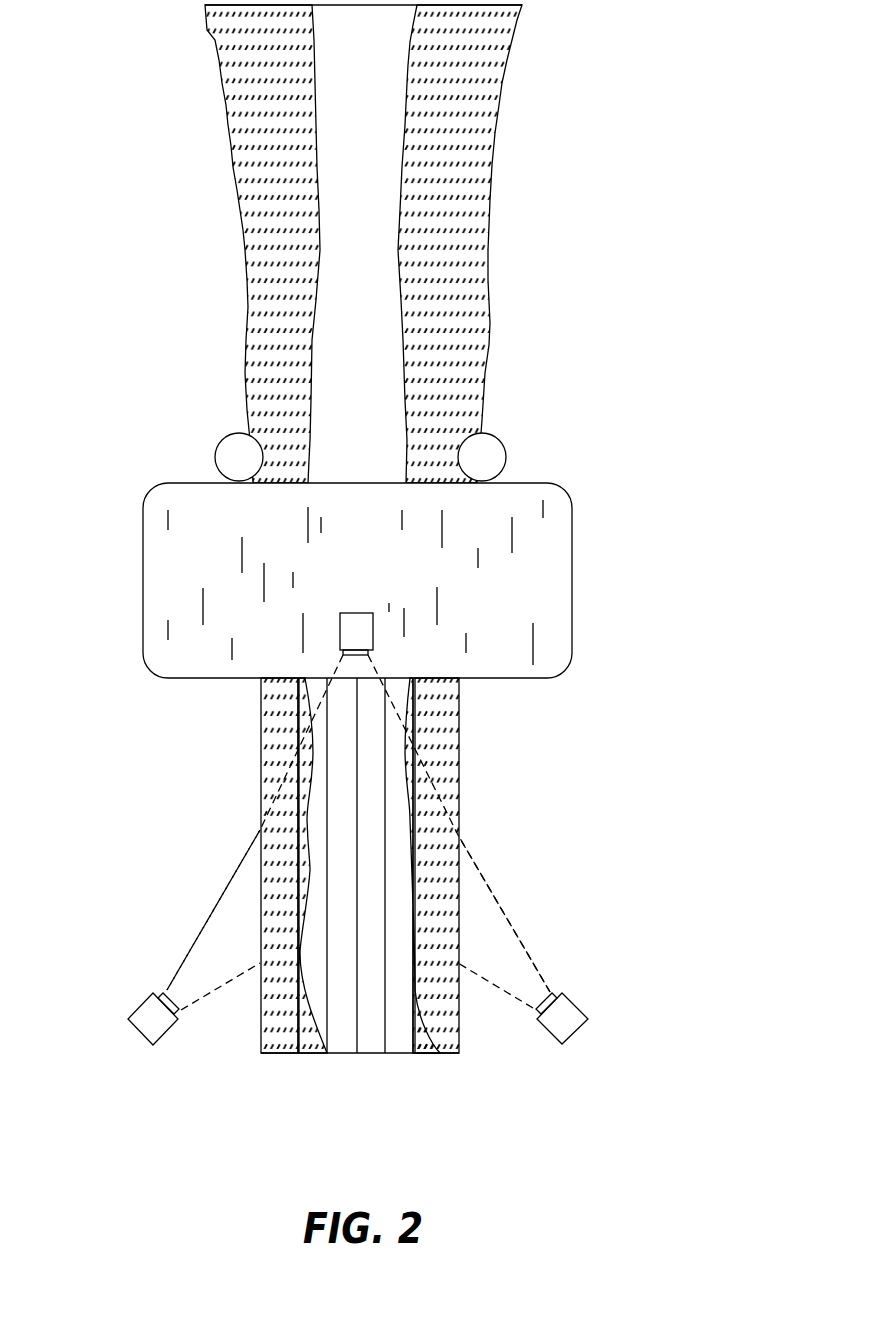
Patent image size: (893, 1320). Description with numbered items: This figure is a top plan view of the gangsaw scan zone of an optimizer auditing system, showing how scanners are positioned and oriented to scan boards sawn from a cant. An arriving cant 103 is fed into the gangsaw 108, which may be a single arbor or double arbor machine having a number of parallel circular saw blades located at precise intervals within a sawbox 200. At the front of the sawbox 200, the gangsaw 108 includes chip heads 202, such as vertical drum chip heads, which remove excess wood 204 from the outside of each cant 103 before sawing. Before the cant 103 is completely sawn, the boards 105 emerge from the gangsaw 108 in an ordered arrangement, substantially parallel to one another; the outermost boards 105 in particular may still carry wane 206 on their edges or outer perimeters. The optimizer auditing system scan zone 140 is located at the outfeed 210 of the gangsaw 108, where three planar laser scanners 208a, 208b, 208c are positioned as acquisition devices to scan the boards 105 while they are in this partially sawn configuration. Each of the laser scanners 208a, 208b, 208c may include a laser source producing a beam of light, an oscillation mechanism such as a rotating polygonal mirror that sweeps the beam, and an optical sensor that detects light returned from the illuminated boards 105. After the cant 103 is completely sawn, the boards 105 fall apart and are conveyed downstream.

The cant 103 is at (538, 333).
The gangsaw 108 is at (386, 572).
The excess wood 204 is at (237, 113).
The chip heads 202 is at (215, 456).
The sawbox 200 is at (573, 598).
The planar laser scanner 208a is at (375, 632).
The planar laser scanner 208b is at (140, 1034).
The planar laser scanner 208c is at (580, 1033).
The wane 206 is at (260, 745).
The outfeed 210 is at (480, 693).
The optimizer auditing system scan zone 140 is at (450, 865).
The boards 105 is at (447, 1095).